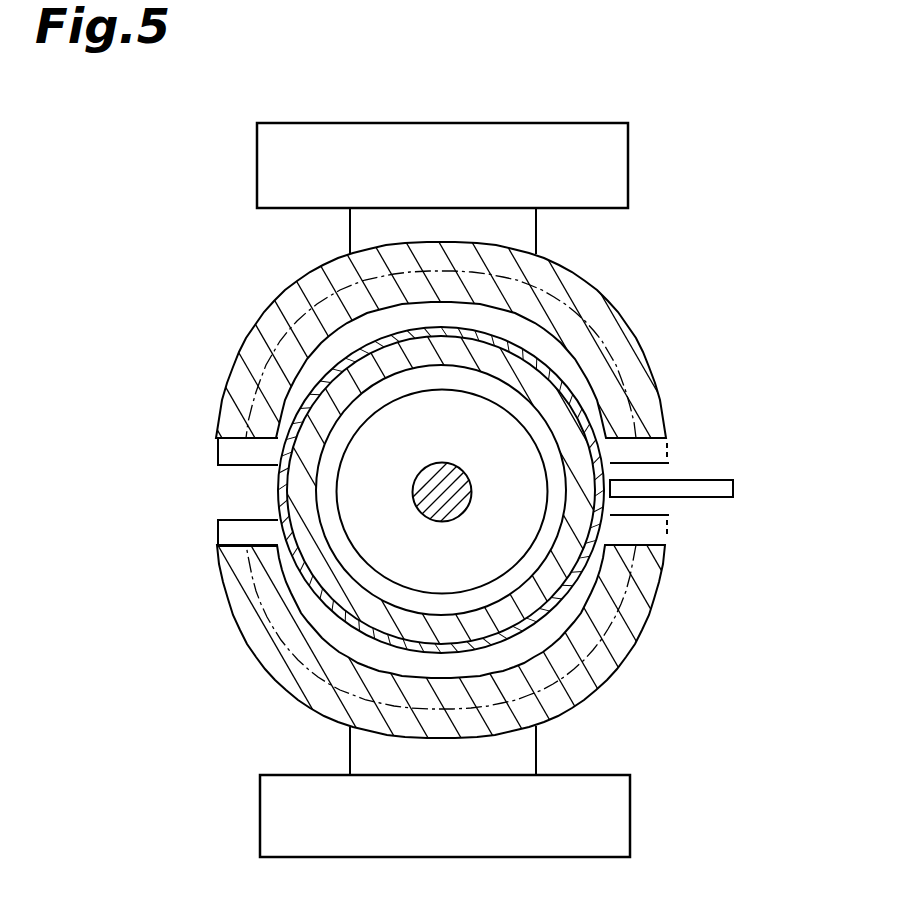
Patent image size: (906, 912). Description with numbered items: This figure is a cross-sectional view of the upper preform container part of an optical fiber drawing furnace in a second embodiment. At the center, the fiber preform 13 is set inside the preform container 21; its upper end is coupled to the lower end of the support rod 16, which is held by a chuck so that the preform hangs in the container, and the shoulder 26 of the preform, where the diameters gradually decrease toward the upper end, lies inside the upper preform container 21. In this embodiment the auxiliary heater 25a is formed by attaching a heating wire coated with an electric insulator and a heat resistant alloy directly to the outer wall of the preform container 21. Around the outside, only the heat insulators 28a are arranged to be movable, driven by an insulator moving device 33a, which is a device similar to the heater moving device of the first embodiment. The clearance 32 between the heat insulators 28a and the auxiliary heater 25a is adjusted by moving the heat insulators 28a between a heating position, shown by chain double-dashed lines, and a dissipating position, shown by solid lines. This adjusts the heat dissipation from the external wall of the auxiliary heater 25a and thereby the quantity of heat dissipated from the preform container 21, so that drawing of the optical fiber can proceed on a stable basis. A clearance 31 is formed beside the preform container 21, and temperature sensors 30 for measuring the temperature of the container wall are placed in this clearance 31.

The fiber preform 13 is at (335, 452).
The support rod 16 is at (455, 508).
The preform container 21 is at (577, 547).
The auxiliary heater 25a is at (560, 377).
The shoulder 26 is at (378, 550).
The heat insulators 28a is at (637, 347).
The temperature sensors 30 is at (697, 485).
The clearance 31 is at (223, 492).
The clearance 32 is at (540, 640).
The insulator moving device 33a is at (630, 127).